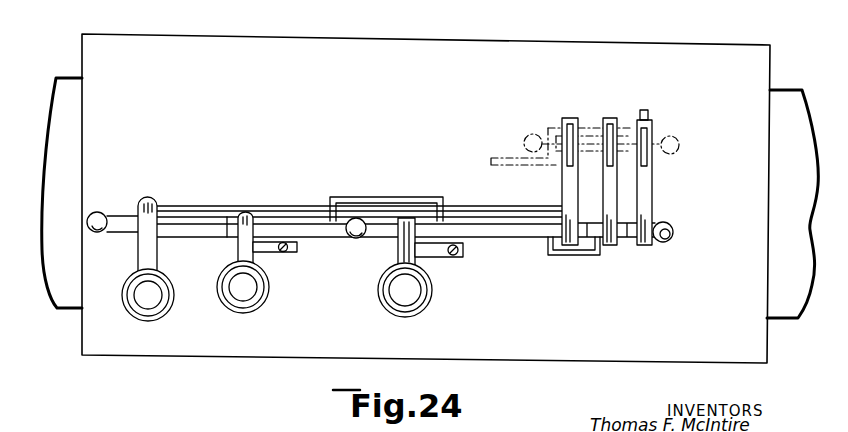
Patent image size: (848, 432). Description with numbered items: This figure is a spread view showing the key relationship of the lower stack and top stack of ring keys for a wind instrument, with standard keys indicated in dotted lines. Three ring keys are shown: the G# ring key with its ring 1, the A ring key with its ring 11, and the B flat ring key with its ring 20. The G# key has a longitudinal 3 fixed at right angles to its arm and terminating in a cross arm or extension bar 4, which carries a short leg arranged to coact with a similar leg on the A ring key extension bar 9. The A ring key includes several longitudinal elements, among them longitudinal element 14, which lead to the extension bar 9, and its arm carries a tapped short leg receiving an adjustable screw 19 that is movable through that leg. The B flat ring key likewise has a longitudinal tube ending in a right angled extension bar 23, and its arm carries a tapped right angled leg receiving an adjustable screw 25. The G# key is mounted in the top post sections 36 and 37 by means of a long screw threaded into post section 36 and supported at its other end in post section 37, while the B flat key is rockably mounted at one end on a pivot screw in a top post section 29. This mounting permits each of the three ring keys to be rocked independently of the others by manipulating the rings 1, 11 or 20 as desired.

The ring 1 is at (159, 315).
The longitudinal 3 is at (217, 206).
The cross arm or extension bar 4 is at (562, 186).
The A ring key extension bar 9 is at (605, 192).
The ring 11 is at (258, 310).
The longitudinal element 14 is at (378, 198).
The screw 19 is at (289, 253).
The ring 20 is at (418, 308).
The right angled extension bar 23 is at (652, 181).
The screw 25 is at (457, 258).
The top post section 29 is at (672, 228).
The top post section 36 is at (356, 238).
The top post section 37 is at (100, 212).